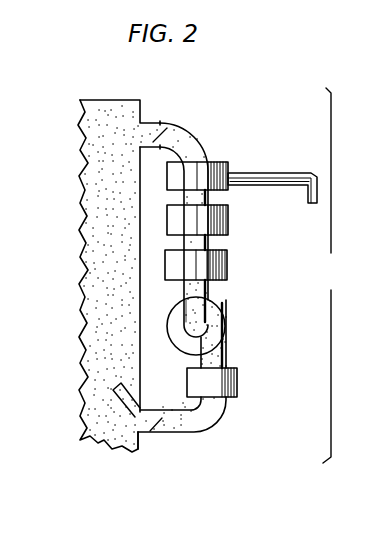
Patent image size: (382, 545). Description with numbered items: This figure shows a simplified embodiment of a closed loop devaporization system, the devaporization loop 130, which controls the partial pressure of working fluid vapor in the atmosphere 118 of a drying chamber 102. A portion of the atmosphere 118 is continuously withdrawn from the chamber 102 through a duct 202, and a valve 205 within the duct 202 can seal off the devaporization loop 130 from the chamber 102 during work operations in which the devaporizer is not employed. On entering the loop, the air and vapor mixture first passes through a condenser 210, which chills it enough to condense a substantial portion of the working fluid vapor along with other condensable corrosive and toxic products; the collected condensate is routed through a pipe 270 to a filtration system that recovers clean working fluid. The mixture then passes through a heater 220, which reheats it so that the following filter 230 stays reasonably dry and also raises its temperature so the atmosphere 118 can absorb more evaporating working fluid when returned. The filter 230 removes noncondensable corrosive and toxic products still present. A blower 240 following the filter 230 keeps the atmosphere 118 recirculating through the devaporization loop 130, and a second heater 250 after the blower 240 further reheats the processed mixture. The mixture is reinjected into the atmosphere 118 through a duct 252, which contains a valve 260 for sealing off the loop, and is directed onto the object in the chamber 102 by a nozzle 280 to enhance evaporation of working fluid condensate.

The chamber 102 is at (97, 100).
The atmosphere 118 is at (97, 201).
The devaporization loop 130 is at (339, 288).
The duct 202 is at (157, 123).
The valve 205 is at (160, 125).
The condenser 210 is at (228, 176).
The heater 220 is at (228, 217).
The filter 230 is at (228, 264).
The blower 240 is at (226, 317).
The second heater 250 is at (237, 383).
The duct 252 is at (219, 421).
The valve 260 is at (154, 432).
The pipe 270 is at (300, 173).
The nozzle 280 is at (125, 394).